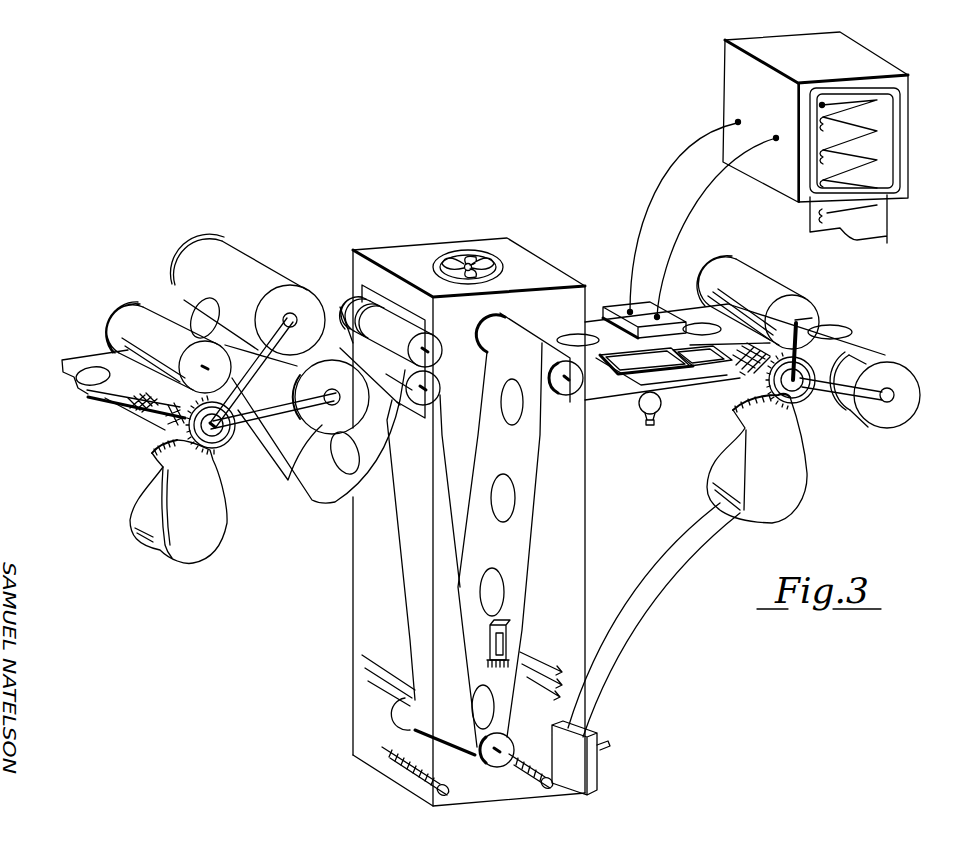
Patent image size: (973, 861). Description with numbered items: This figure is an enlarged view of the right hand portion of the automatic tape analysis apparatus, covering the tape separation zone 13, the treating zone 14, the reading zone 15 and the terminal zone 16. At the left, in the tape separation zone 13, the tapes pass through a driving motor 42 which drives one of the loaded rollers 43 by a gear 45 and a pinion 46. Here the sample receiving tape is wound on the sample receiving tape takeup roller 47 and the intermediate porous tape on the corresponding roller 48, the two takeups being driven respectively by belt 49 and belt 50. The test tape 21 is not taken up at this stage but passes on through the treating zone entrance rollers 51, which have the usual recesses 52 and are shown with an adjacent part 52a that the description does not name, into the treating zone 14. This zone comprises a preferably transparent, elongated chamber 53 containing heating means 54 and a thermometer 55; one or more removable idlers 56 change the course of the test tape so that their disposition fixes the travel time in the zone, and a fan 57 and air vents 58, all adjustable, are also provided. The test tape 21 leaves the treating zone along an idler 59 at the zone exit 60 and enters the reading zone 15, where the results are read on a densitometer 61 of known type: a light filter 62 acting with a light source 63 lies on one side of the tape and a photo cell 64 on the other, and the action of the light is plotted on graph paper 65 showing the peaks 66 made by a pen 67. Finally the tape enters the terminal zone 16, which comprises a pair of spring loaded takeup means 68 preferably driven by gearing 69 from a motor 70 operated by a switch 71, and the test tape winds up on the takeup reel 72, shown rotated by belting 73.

The tape separation zone 13 is at (320, 350).
The treating zone 14 is at (491, 240).
The reading zone 15 is at (670, 183).
The terminal zone 16 is at (838, 334).
The test tape 21 is at (310, 503).
The driving motor 42 is at (196, 562).
The loaded rollers 43 is at (152, 315).
The gear 45 is at (150, 453).
The pinion 46 is at (180, 422).
The sample receiving tape takeup roller 47 is at (217, 243).
The intermediate tape takeup roller 48 is at (305, 383).
The belt 49 is at (270, 362).
The belt 50 is at (262, 413).
The treating zone entrance rollers 51 is at (349, 307).
The recesses 52 is at (388, 318).
The roller mounting plate 52a is at (364, 300).
The chamber 53 is at (352, 720).
The heating means 54 is at (410, 782).
The thermometer 55 is at (510, 641).
The idlers 56 is at (497, 765).
The fan 57 is at (493, 265).
The air vents 58 is at (362, 655).
The idler 59 is at (577, 386).
The zone exit 60 is at (503, 323).
The densitometer 61 is at (723, 83).
The light filter 62 is at (628, 380).
The light source 63 is at (645, 425).
The photo cell 64 is at (660, 313).
The graph paper 65 is at (876, 92).
The peaks 66 is at (847, 100).
The pen 67 is at (822, 103).
The spring loaded takeup means 68 is at (755, 277).
The gearing 69 is at (797, 412).
The motor 70 is at (795, 506).
The switch 71 is at (598, 764).
The takeup reel 72 is at (890, 426).
The belting 73 is at (862, 386).